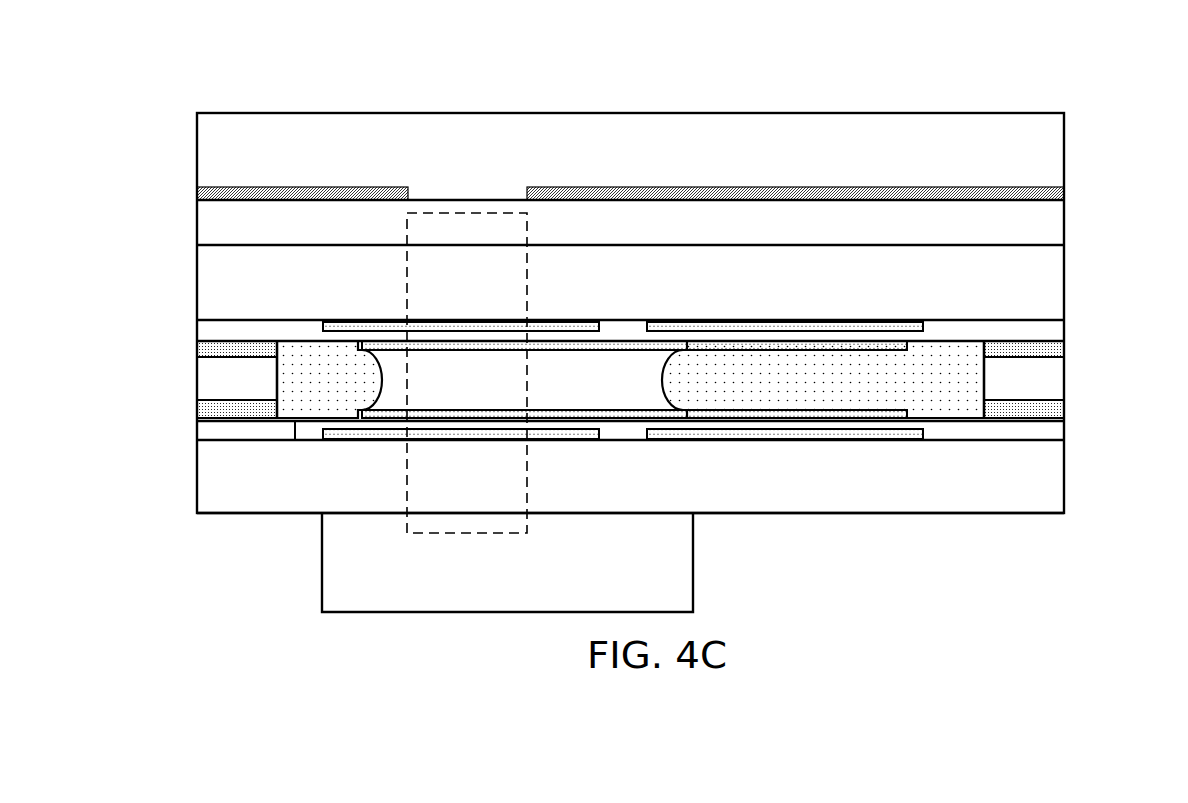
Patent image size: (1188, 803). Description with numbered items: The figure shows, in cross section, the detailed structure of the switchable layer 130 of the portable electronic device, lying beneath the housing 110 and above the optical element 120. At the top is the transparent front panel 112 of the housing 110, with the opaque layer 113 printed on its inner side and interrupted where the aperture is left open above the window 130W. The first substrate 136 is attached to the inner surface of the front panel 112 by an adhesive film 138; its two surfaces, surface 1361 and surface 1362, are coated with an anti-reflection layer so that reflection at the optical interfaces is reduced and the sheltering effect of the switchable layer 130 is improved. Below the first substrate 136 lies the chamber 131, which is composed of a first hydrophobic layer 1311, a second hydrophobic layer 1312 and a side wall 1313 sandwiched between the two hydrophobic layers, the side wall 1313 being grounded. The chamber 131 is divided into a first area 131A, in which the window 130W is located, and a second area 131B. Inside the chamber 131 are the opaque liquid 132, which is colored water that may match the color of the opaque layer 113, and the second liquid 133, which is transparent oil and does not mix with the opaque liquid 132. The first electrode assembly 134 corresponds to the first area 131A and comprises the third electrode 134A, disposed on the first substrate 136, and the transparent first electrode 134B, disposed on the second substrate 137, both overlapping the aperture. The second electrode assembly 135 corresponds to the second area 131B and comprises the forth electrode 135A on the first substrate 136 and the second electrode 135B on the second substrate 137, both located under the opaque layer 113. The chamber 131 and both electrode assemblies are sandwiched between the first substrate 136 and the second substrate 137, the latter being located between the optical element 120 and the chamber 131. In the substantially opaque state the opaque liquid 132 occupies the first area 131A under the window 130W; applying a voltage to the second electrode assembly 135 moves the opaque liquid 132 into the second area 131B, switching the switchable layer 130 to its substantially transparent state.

The housing 110 is at (630, 313).
The front panel 112 is at (1056, 156).
The opaque layer 113 is at (197, 193).
The optical element 120 is at (332, 561).
The switchable layer 130 is at (194, 382).
The window 130W is at (458, 210).
The chamber 131 is at (671, 230).
The first hydrophobic layer 1311 is at (1056, 327).
The second hydrophobic layer 1312 is at (1056, 429).
The side wall 1313 is at (1056, 379).
The first area 131A is at (432, 387).
The second area 131B is at (872, 387).
The opaque liquid 132 is at (805, 387).
The second liquid 133 is at (625, 383).
The first electrode assembly 134 is at (509, 247).
The third electrode 134A is at (353, 322).
The first electrode 134B is at (353, 440).
The second electrode assembly 135 is at (899, 246).
The forth electrode 135A is at (908, 320).
The second electrode 135B is at (910, 440).
The first substrate 136 is at (671, 258).
The surface 1361 is at (1003, 245).
The surface 1362 is at (1032, 320).
The second substrate 137 is at (1056, 492).
The adhesive film 138 is at (1056, 229).